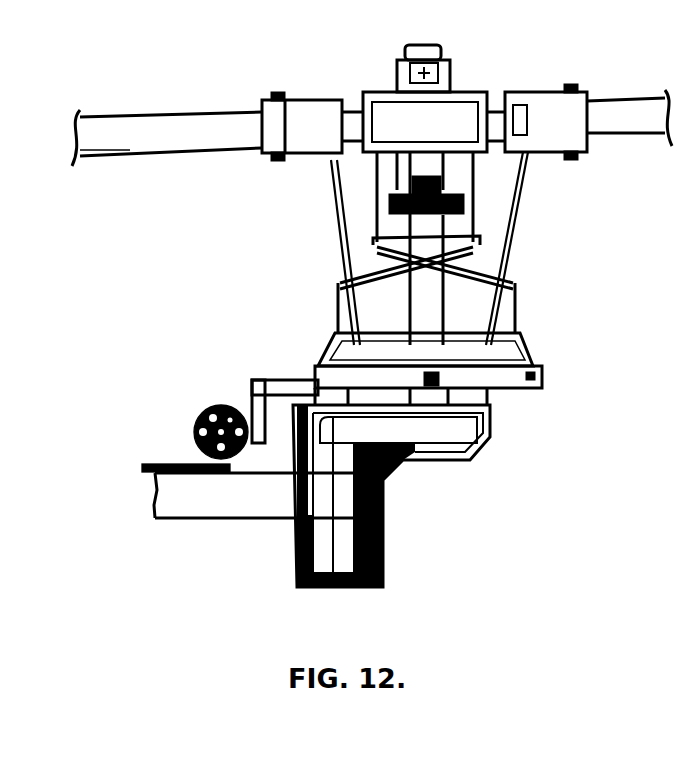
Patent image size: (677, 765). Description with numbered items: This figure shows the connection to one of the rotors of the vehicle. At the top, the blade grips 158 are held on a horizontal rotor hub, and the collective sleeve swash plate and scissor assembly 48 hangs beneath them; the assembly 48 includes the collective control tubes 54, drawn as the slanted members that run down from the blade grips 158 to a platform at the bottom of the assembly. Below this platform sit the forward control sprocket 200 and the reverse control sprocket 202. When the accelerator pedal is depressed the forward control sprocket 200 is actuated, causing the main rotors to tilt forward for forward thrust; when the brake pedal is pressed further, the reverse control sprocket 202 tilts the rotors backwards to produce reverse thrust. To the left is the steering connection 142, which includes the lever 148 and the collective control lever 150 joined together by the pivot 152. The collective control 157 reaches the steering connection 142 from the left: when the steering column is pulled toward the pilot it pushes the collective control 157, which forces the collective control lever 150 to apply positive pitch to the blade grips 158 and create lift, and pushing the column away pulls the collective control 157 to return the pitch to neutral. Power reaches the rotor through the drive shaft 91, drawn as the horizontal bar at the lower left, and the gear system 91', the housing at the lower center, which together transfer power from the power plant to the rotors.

The blade grips 158 is at (308, 110).
The collective control tubes 54 is at (510, 183).
The collective sleeve swash plate and scissor assembly 48 is at (537, 258).
The reverse control sprocket 202 is at (312, 354).
The forward control sprocket 200 is at (537, 353).
The collective control lever 150 is at (300, 368).
The pivot 152 is at (258, 390).
The lever 148 is at (253, 408).
The steering connection 142 is at (207, 408).
The collective control 157 is at (140, 465).
The drive shaft 91 is at (268, 534).
The gear system 91' is at (391, 496).